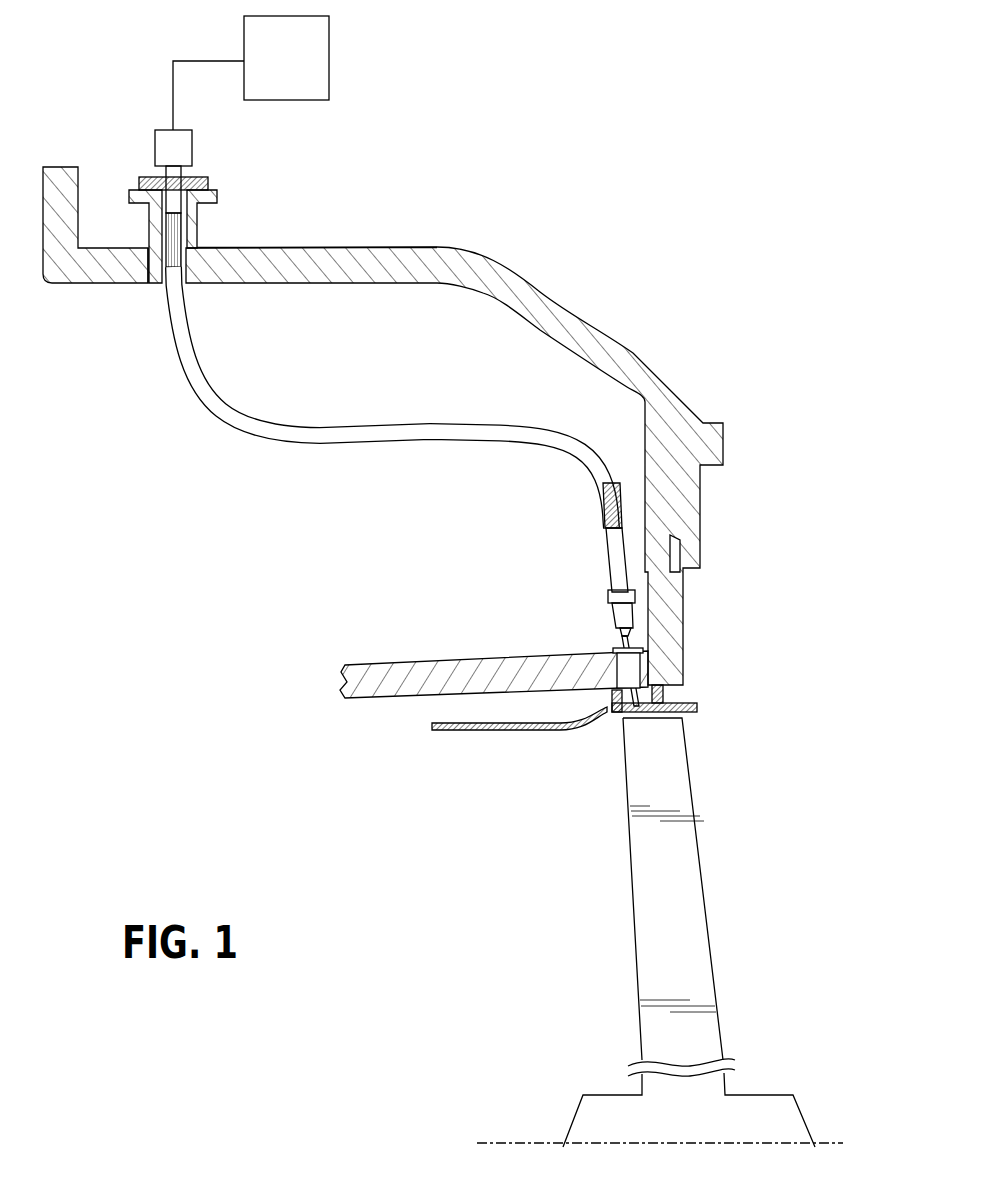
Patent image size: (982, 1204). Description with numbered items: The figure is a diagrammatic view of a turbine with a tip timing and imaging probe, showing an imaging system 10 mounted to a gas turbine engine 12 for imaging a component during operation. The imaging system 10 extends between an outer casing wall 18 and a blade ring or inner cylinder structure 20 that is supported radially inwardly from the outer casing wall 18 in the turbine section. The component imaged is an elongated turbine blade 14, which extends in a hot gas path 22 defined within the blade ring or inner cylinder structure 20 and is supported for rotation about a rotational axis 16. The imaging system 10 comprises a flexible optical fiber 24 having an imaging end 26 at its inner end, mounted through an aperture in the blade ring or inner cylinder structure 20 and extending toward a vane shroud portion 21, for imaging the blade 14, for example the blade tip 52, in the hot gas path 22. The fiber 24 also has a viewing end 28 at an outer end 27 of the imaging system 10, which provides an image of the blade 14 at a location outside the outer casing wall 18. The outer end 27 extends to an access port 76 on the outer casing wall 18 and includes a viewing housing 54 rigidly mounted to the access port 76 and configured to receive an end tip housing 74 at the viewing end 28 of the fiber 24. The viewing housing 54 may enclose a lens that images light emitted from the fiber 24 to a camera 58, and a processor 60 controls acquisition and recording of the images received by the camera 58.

The imaging system 10 is at (329, 465).
The gas turbine engine 12 is at (574, 281).
The turbine blade 14 is at (709, 862).
The rotational axis 16 is at (513, 1143).
The outer casing wall 18 is at (373, 244).
The blade ring or inner cylinder structure 20 is at (398, 658).
The vane shroud portion 21 is at (477, 731).
The hot gas path 22 is at (527, 886).
The flexible optical fiber 24 is at (410, 425).
The imaging end 26 is at (609, 722).
The outer end 27 is at (146, 169).
The viewing end 28 is at (160, 240).
The blade tip 52 is at (677, 715).
The viewing housing 54 is at (193, 198).
The camera 58 is at (164, 127).
The processor 60 is at (286, 58).
The end tip housing 74 is at (172, 240).
The access port 76 is at (147, 218).